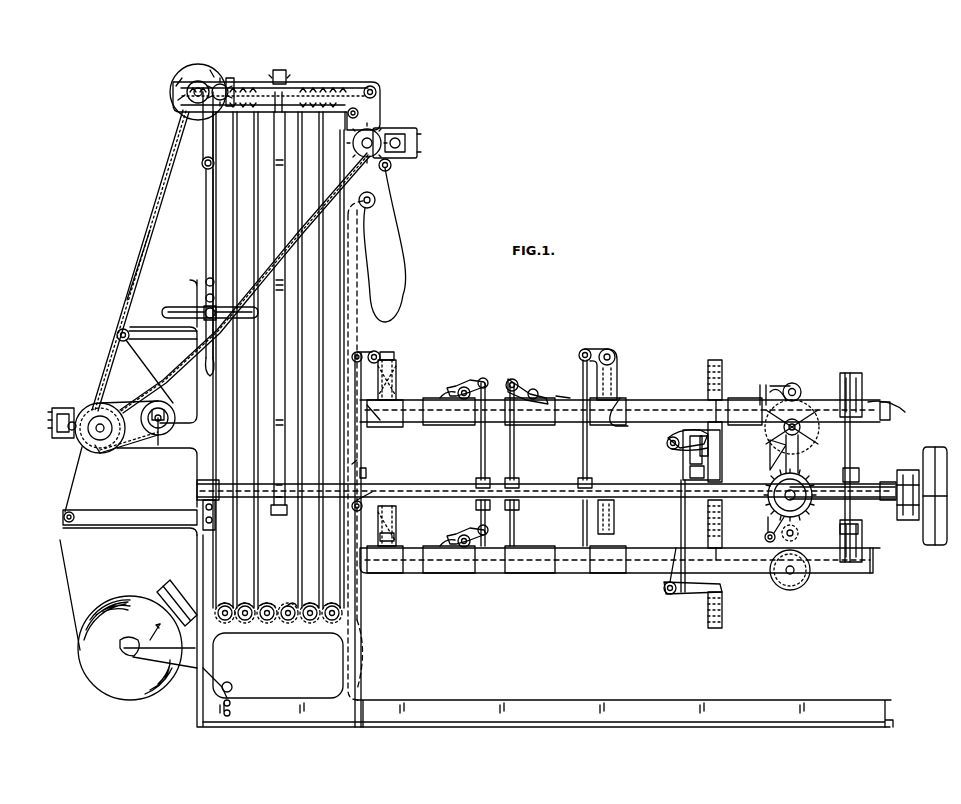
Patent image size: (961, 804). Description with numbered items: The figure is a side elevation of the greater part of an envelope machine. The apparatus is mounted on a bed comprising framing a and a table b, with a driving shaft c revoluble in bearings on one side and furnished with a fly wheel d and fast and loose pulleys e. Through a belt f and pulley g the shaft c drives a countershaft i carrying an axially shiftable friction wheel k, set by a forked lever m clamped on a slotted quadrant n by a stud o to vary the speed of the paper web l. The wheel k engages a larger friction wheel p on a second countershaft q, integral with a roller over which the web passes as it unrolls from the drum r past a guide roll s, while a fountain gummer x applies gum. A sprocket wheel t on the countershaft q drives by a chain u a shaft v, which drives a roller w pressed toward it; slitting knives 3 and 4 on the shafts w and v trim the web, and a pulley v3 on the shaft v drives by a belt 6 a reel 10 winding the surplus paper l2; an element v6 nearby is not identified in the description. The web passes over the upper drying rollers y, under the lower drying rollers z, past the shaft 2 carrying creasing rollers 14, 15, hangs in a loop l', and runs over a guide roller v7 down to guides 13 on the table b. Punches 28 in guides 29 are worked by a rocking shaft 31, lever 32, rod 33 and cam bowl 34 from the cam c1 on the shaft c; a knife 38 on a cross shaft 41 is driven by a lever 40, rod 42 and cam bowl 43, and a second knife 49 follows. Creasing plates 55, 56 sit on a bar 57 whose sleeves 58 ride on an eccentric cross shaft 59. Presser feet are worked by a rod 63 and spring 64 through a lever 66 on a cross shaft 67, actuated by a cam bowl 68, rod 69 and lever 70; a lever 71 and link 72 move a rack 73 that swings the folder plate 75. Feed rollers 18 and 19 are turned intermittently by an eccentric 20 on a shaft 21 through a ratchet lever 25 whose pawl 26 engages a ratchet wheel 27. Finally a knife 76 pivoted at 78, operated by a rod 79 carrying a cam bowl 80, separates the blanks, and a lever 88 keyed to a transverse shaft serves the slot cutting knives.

The friction wheel p is at (205, 66).
The friction wheel k is at (226, 78).
The countershaft i is at (274, 84).
The drying rollers y is at (300, 84).
The sprocket wheel t is at (175, 112).
The chain u is at (128, 296).
The creasing roller 14 is at (380, 128).
The creasing roller 15 is at (408, 130).
The shaft or roller 2 is at (391, 165).
The guide roller v7 is at (376, 198).
The loop of paper web l' is at (379, 434).
The web of paper l is at (482, 371).
The double armed forked lever m is at (205, 232).
The screw threaded stud o is at (214, 299).
The slotted quadrant n is at (176, 306).
The pivot link v6 is at (157, 351).
The surplus paper l2 is at (150, 357).
The shaft v is at (88, 408).
The belt 6 is at (122, 404).
The pulley v3 is at (129, 449).
The reel 10 is at (172, 410).
The second countershaft q is at (159, 446).
The rotary slitting knife 3 is at (58, 438).
The roller shaft w is at (72, 432).
The rotary slitting knife 4 is at (97, 447).
The guide roll s is at (72, 514).
The reel or drum of paper r is at (132, 600).
The fountain gummer x is at (175, 596).
The standards or framing a is at (530, 702).
The drying rollers z is at (286, 626).
The belt f is at (278, 367).
The pulley g is at (274, 514).
The driving shaft c is at (288, 504).
The cam c1 is at (862, 486).
The table b is at (445, 426).
The guides 13 is at (385, 424).
The lever 32 is at (362, 352).
The rocking shaft 31 is at (381, 354).
The punches 28 is at (396, 356).
The guides 29 is at (398, 376).
The rod 33 is at (362, 458).
The cam roller 34 is at (368, 473).
The lever 88 is at (363, 504).
The knife 38 is at (444, 396).
The cross shaft 41 is at (465, 386).
The lever 40 is at (488, 380).
The rod 42 is at (481, 455).
The cam bowl 43 is at (478, 502).
The knife 49 is at (538, 396).
The creasing plate 55 is at (570, 389).
The creasing plate 56 is at (626, 398).
The strap or sleeve 58 is at (602, 350).
The eccentric cross shaft 59 is at (618, 356).
The bar 57 is at (614, 518).
The rod 69 is at (681, 514).
The rack 73 is at (724, 372).
The folder plate 75 is at (740, 396).
The lever 66 is at (722, 450).
The cross shaft 67 is at (696, 450).
The cam bowl 68 is at (701, 473).
The link 72 is at (712, 440).
The lever 71 is at (668, 441).
The lever 70 is at (670, 451).
The rod 63 is at (722, 588).
The spring 64 is at (722, 606).
The ratchet lever 25 is at (762, 384).
The pawl 26 is at (778, 384).
The ratchet wheel 27 is at (800, 394).
The feed roller 18 is at (796, 383).
The feed roller 19 is at (802, 434).
The shaft 21 is at (806, 480).
The eccentric 20 is at (773, 527).
The rod 79 is at (846, 510).
The pivot 78 is at (851, 444).
The cam bowl 80 is at (858, 474).
The knife 76 is at (864, 388).
The fast and loose pulleys e is at (906, 470).
The fly wheel d is at (926, 452).